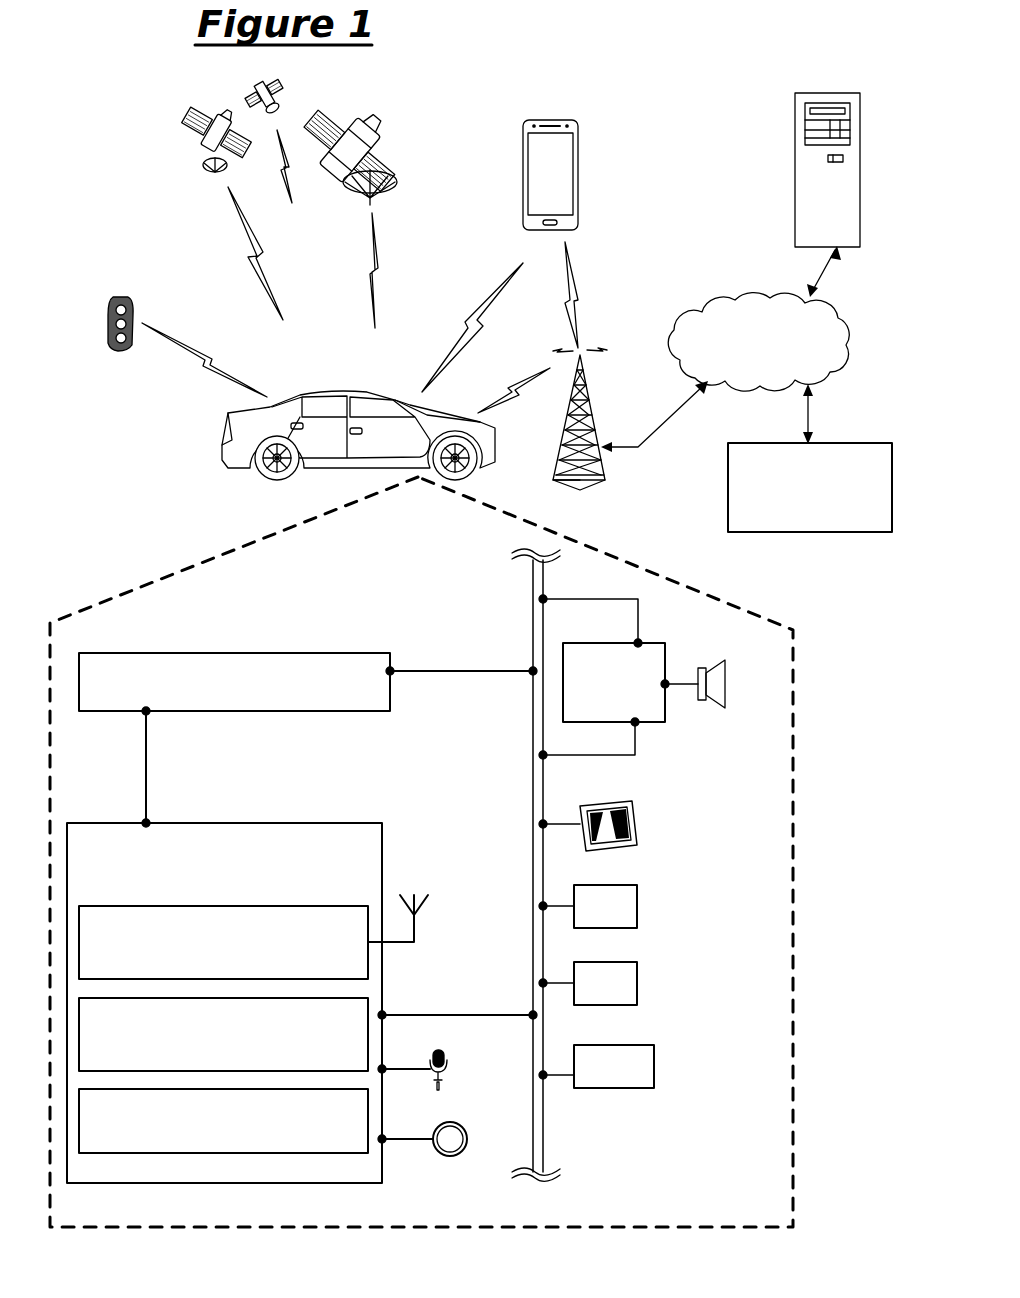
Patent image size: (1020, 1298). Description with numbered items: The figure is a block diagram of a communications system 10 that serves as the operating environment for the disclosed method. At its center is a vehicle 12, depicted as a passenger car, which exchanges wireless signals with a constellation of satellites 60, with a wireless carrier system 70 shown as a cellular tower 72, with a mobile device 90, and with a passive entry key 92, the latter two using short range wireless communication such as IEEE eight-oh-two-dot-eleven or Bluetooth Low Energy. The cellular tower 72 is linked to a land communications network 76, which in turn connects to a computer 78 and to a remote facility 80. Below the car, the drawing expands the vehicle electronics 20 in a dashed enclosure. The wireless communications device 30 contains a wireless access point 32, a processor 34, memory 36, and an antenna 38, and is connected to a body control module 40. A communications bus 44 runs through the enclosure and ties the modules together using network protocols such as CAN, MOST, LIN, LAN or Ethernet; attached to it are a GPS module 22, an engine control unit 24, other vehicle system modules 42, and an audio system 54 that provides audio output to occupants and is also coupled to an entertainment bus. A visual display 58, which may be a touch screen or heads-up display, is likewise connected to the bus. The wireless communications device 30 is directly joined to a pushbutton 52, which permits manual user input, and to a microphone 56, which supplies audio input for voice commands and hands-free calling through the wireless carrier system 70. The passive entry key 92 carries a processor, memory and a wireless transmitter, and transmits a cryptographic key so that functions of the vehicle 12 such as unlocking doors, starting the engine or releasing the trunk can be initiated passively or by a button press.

The communications system 10 is at (764, 57).
The vehicle 12 is at (343, 392).
The vehicle electronics 20 is at (793, 1050).
The GPS module 22 is at (638, 905).
The engine control unit 24 is at (638, 982).
The wireless communications device 30 is at (282, 822).
The wireless access point 32 is at (223, 942).
The processor 34 is at (223, 1034).
The memory 36 is at (223, 1121).
The antenna 38 is at (416, 927).
The body control module 40 is at (281, 652).
The other vehicle system modules 42 is at (655, 1073).
The communications bus 44 is at (546, 1110).
The pushbutton 52 is at (465, 1128).
The audio system 54 is at (666, 660).
The microphone 56 is at (448, 1066).
The visual display 58 is at (638, 823).
The constellation of satellites 60 is at (416, 126).
The wireless carrier system 70 is at (630, 482).
The cellular tower 72 is at (591, 392).
The land communications network 76 is at (855, 343).
The computer 78 is at (861, 205).
The remote facility 80 is at (810, 487).
The mobile device 90 is at (579, 148).
The passive entry key 92 is at (108, 300).